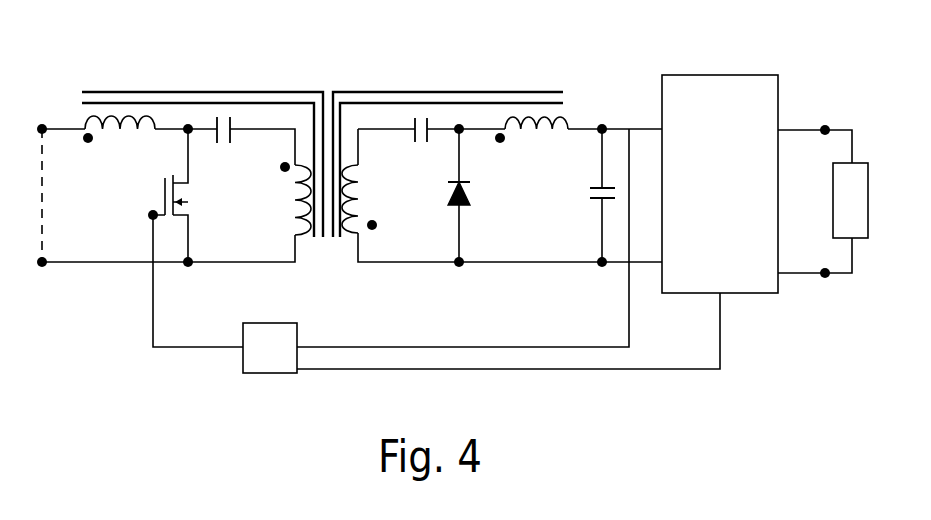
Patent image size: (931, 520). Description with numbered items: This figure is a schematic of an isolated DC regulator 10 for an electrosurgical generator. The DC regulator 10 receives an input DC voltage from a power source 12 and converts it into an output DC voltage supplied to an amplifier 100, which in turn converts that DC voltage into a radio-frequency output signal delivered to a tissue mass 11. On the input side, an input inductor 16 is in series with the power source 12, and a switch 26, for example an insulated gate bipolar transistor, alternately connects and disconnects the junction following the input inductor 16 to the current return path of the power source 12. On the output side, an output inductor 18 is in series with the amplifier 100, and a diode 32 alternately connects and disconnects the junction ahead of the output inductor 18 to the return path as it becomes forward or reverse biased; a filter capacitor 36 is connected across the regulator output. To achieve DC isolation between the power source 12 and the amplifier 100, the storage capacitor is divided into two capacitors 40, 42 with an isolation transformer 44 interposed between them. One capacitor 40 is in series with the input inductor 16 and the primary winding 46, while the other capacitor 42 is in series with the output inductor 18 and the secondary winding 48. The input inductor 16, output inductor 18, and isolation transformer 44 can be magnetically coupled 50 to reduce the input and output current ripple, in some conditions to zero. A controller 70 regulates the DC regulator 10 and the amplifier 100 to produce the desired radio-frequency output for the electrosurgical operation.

The DC regulator 10 is at (338, 58).
The tissue mass 11 is at (841, 211).
The power source 12 is at (44, 195).
The input inductor 16 is at (82, 122).
The output inductor 18 is at (567, 120).
The switch 26 is at (165, 190).
The diode 32 is at (472, 196).
The filter capacitor 36 is at (594, 198).
The capacitor 40 is at (233, 133).
The capacitor 42 is at (415, 139).
The isolation transformer 44 is at (333, 231).
The primary winding 46 is at (297, 232).
The secondary winding 48 is at (357, 232).
The magnetic coupling 50 is at (352, 90).
The controller 70 is at (257, 360).
The amplifier 100 is at (700, 196).